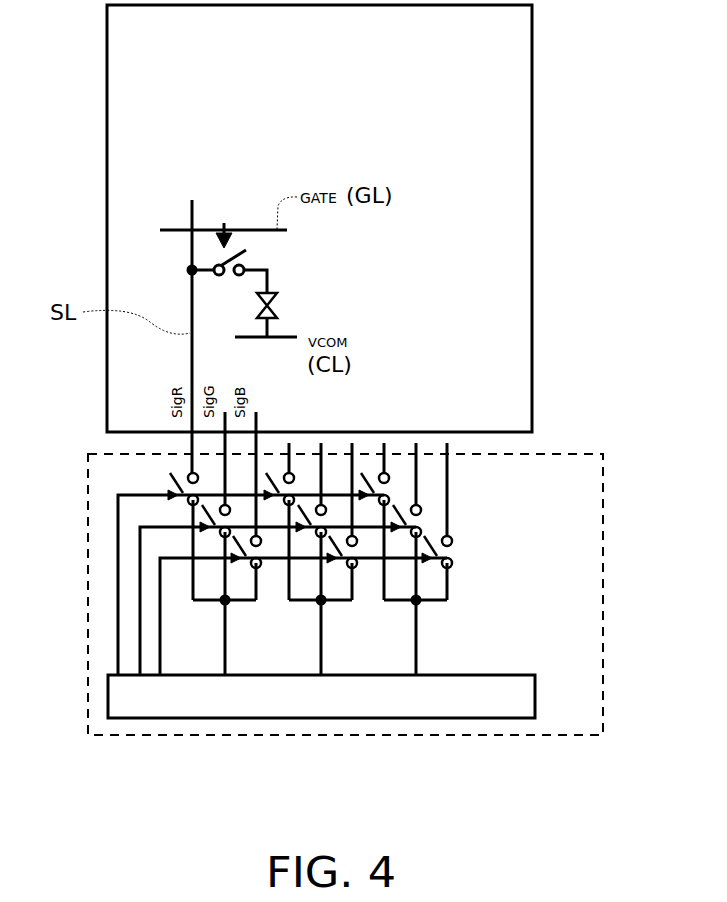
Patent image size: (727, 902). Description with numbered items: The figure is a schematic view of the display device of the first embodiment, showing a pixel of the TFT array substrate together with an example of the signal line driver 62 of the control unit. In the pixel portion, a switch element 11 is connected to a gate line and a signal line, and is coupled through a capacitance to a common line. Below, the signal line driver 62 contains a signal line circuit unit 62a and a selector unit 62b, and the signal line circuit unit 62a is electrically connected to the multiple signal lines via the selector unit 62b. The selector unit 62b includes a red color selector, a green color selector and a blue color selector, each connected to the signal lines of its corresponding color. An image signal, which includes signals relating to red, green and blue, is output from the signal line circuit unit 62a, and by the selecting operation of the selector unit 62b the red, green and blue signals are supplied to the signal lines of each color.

The switch element 11 is at (250, 262).
The signal line driver 62 is at (604, 586).
The signal line circuit unit 62a is at (536, 693).
The selector unit 62b is at (87, 470).